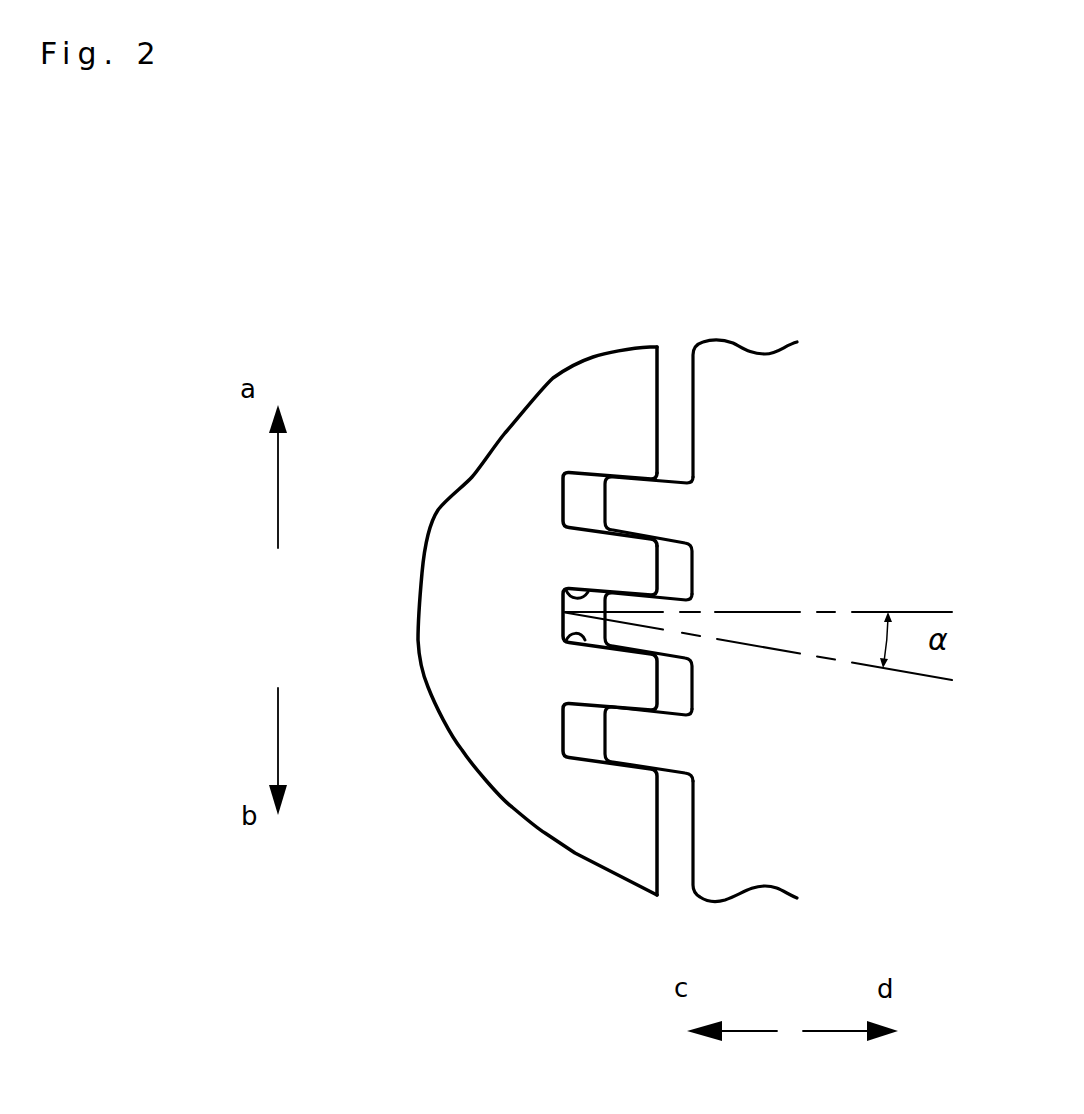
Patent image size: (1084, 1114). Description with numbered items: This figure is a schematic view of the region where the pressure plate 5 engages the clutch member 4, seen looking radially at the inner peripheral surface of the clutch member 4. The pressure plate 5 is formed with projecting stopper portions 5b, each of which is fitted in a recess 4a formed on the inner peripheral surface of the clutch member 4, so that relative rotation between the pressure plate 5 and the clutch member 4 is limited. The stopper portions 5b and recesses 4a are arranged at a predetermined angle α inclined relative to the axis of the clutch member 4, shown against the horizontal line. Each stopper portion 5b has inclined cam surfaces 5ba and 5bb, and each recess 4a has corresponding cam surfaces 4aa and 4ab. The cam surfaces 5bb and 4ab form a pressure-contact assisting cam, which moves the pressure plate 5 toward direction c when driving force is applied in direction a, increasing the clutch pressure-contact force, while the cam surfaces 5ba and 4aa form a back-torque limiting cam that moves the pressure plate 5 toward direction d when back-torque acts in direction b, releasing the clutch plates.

The clutch member 4 is at (473, 493).
The recess 4a is at (573, 487).
The cam surface 4aa is at (572, 590).
The cam surface 4ab is at (565, 633).
The pressure plate 5 is at (733, 363).
The stopper portion 5b is at (633, 495).
The cam surface 5ba is at (650, 707).
The cam surface 5bb is at (650, 773).